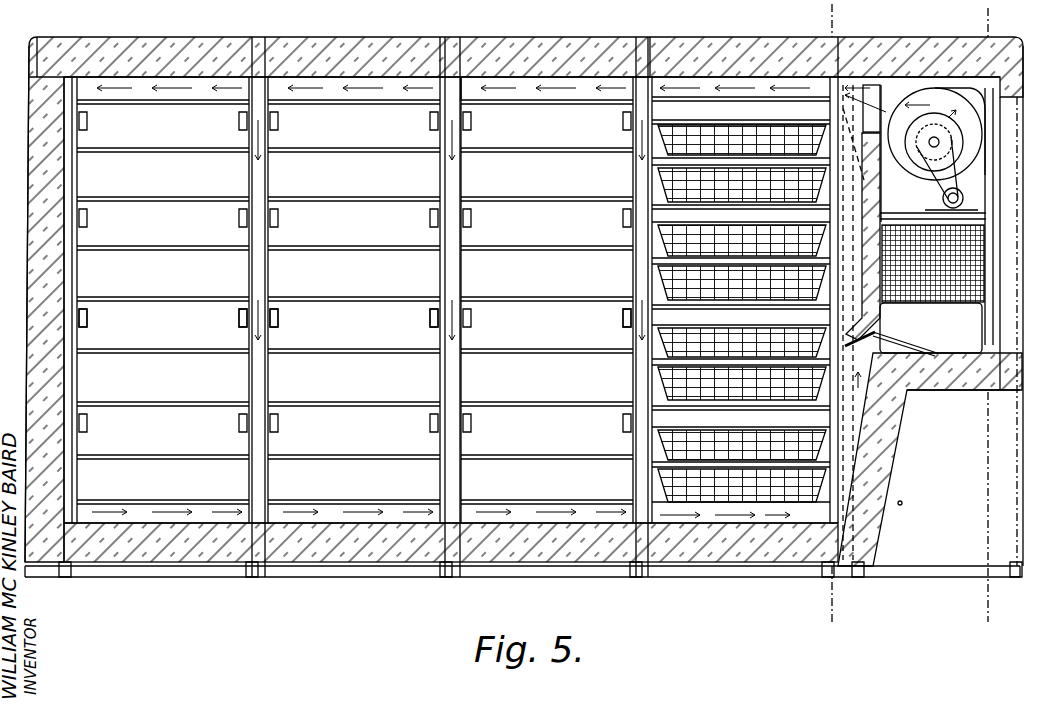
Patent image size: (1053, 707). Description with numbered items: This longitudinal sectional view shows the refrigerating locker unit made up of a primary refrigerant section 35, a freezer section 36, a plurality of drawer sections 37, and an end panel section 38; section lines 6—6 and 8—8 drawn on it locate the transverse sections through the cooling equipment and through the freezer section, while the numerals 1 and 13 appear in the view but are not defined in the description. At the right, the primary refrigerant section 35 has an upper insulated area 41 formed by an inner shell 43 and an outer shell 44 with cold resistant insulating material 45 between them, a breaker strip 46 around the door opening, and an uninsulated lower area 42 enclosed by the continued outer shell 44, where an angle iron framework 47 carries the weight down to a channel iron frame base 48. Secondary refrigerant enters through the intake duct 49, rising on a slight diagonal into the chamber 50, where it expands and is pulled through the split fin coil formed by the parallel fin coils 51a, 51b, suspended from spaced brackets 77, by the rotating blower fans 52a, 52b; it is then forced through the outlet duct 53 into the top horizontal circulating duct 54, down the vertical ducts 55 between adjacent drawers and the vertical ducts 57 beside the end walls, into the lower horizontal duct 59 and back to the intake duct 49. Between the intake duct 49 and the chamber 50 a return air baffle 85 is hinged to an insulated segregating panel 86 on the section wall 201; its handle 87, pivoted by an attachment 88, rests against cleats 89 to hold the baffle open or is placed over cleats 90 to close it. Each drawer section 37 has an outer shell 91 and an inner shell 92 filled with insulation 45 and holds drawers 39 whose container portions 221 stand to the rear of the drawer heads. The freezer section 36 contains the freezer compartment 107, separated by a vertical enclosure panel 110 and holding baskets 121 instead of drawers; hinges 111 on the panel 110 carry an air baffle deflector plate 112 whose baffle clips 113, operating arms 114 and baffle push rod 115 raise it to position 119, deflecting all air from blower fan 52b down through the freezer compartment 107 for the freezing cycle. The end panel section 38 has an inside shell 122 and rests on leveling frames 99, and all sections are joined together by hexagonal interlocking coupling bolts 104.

The refrigerated cabinet 1 is at (27, 268).
The section line 6— 6 is at (984, 17).
The section line 8— 8 is at (826, 17).
The base 13 is at (987, 390).
The primary refrigerant section 35 is at (928, 37).
The freezer section 36 is at (762, 35).
The drawer section 37 is at (180, 35).
The end panel section 38 is at (56, 35).
The drawer 39 is at (551, 438).
The upper insulated area 41 is at (985, 203).
The uninsulated lower area 42 is at (994, 458).
The inner shell 43 is at (986, 88).
The outer shell 44 is at (1023, 46).
The cold resistant insulating material 45 is at (482, 52).
The breaker strip 46 is at (1012, 320).
The angle iron framework 47 is at (855, 387).
The channel iron frame base 48 is at (853, 577).
The intake duct 49 is at (830, 515).
The chamber 50 is at (957, 329).
The fin coil 51a is at (898, 312).
The fin coil 51b is at (962, 312).
The blower fan 52a is at (913, 172).
The blower fan 52b is at (977, 128).
The outlet duct 53 is at (876, 153).
The top horizontal circulating duct 54 is at (514, 88).
The vertical duct 55 is at (262, 320).
The vertical duct 57 is at (76, 268).
The lower horizontal duct 59 is at (451, 513).
The spaced brackets 77 is at (986, 232).
The return air baffle 85 is at (862, 334).
The insulated segregating panel 86 is at (862, 262).
The handle 87 is at (905, 337).
The attachment 88 is at (867, 332).
The cleats 89 is at (931, 339).
The cleats 90 is at (968, 339).
The outer shell 91 is at (444, 37).
The inner shell 92 is at (304, 584).
The leveling frames 99 is at (76, 578).
The hexagonal interlocking coupling bolts 104 is at (868, 172).
The freezer compartment 107 is at (745, 426).
The vertical enclosure panel 110 is at (745, 300).
The hinges 111 is at (670, 113).
The air baffle deflector plate 112 is at (706, 113).
The baffle clips 113 is at (806, 114).
The operating arms 114 is at (830, 114).
The baffle push rod 115 is at (780, 114).
The raised position 119 is at (750, 113).
The baskets 121 is at (762, 190).
The inside shell 122 is at (85, 324).
The section wall 201 is at (830, 416).
The container portion 221 is at (349, 326).